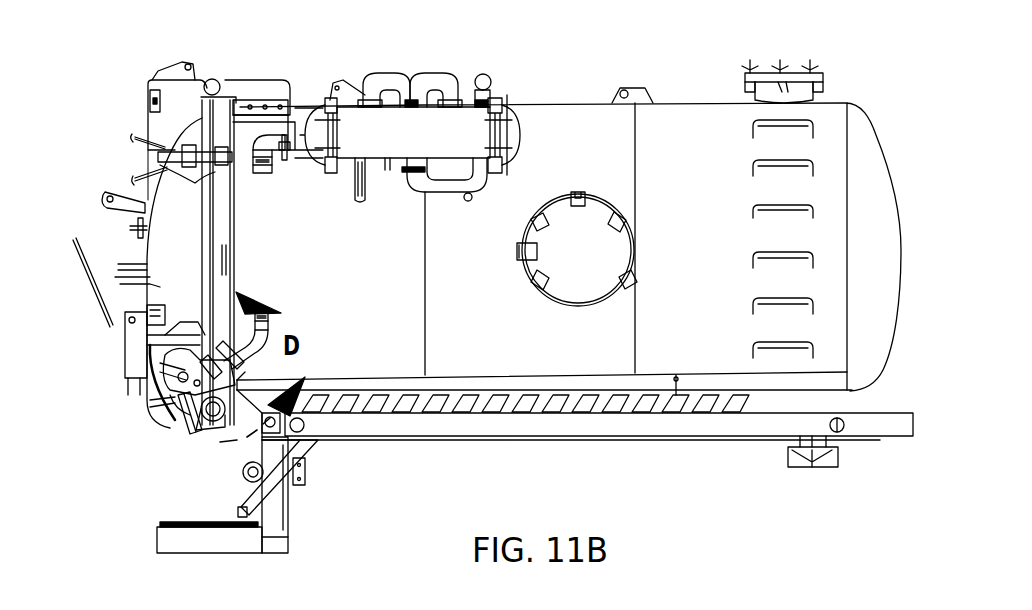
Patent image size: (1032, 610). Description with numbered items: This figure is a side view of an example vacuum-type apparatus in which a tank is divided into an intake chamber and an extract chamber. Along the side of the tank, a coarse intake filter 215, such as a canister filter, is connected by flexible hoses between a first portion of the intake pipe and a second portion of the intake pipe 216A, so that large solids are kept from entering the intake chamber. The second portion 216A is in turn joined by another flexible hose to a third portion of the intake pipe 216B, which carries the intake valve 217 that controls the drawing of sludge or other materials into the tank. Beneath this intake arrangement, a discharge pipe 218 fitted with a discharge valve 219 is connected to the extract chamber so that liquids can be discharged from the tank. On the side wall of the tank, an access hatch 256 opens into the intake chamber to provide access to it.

The coarse intake filter 215 is at (433, 130).
The second portion of the intake pipe 216A is at (268, 138).
The third portion of the intake pipe 216B is at (270, 320).
The intake valve 217 is at (207, 351).
The discharge pipe 218 is at (210, 427).
The discharge valve 219 is at (191, 424).
The access hatch 256 is at (605, 216).